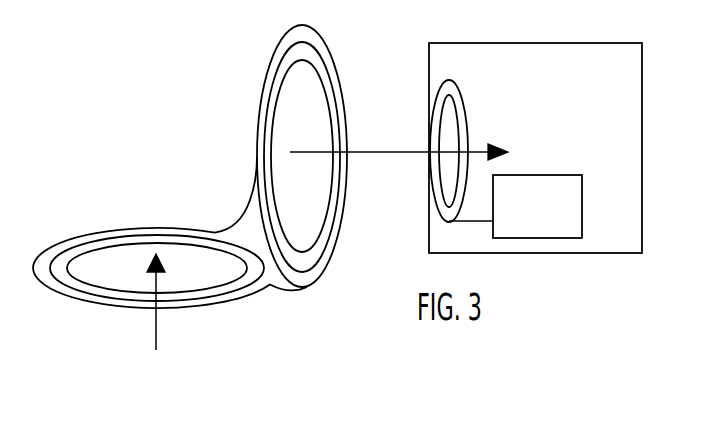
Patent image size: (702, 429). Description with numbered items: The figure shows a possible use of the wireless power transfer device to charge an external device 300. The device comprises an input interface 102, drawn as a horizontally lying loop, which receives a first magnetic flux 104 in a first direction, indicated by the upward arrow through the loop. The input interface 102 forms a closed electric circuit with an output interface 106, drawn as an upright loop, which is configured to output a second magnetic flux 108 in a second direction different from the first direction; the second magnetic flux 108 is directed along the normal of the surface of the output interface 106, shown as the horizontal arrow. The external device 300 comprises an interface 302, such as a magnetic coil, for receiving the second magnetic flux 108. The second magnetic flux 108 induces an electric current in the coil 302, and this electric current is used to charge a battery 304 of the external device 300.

The input interface 102 is at (53, 242).
The first magnetic flux 104 is at (153, 327).
The output interface 106 is at (327, 42).
The second magnetic flux 108 is at (353, 150).
The external device 300 is at (507, 43).
The interface 302 is at (462, 100).
The battery 304 is at (552, 175).